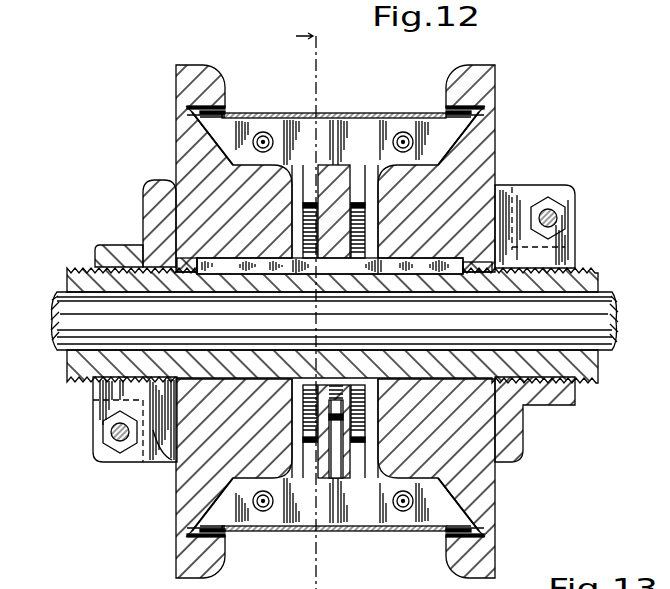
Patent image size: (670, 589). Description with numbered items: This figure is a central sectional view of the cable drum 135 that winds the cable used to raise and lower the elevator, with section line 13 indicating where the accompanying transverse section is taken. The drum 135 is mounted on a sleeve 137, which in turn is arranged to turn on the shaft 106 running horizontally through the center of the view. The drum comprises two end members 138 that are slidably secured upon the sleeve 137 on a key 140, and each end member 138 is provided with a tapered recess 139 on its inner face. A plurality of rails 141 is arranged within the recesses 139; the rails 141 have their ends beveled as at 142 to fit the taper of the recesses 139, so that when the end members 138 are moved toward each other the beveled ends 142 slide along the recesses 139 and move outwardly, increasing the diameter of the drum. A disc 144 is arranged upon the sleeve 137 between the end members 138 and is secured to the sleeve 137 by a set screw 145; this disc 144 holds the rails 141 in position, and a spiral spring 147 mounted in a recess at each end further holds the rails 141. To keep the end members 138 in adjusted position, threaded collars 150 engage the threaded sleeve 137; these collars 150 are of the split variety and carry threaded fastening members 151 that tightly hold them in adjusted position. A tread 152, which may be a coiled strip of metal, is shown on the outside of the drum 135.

The section line 13— 13 is at (289, 310).
The shaft 106 is at (598, 316).
The cable drum 135 is at (496, 184).
The sleeve 137 is at (592, 286).
The end members 138 is at (182, 143).
The recesses 139 is at (482, 112).
The key 140 is at (213, 262).
The rails 141 is at (214, 134).
The beveled ends 142 is at (203, 133).
The disc 144 is at (334, 160).
The set screw 145 is at (318, 476).
The spiral spring 147 is at (264, 132).
The threaded collars 150 is at (97, 252).
The threaded fastening members 151 is at (553, 220).
The tread 152 is at (330, 113).